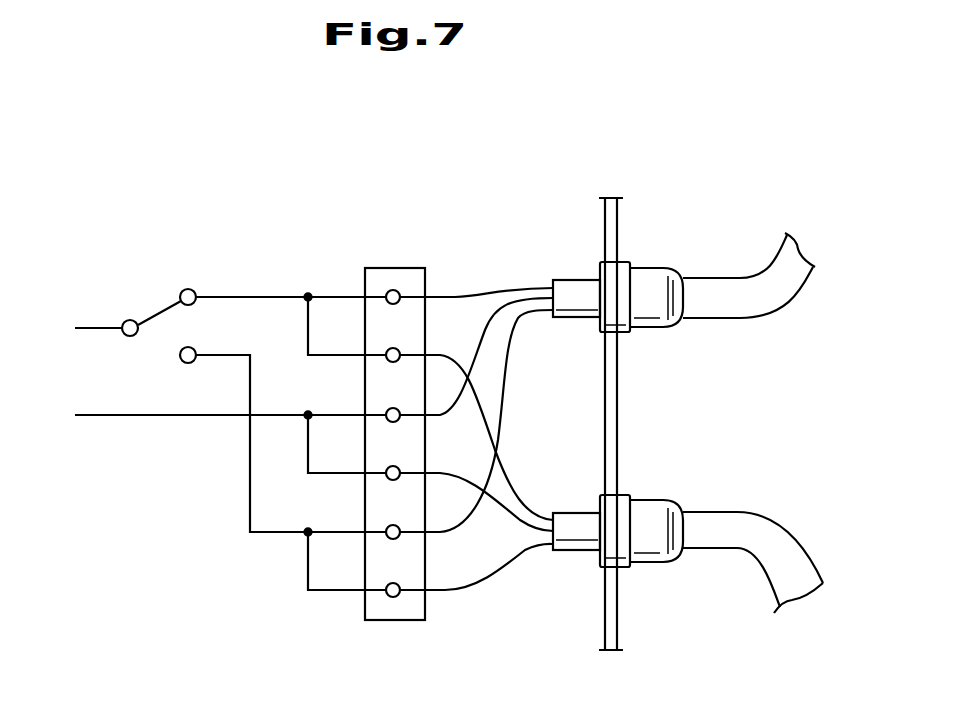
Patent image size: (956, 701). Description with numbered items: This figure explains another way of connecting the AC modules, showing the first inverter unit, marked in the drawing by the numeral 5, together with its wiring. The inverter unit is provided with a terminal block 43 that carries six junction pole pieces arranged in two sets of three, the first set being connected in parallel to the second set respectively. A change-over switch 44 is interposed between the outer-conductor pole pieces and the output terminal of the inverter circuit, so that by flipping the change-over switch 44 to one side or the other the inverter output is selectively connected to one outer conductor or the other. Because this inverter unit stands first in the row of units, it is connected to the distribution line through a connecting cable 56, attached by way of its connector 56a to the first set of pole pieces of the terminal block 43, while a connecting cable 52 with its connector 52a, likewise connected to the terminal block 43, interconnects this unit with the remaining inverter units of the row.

The vacuum tube unit VTUA1 5 is at (275, 240).
The change-over switch 44 is at (163, 303).
The terminal block 43 is at (410, 268).
The connector 56a is at (648, 283).
The connecting cable 56 is at (747, 280).
The connector 52a is at (658, 515).
The connecting cable 52 is at (773, 540).